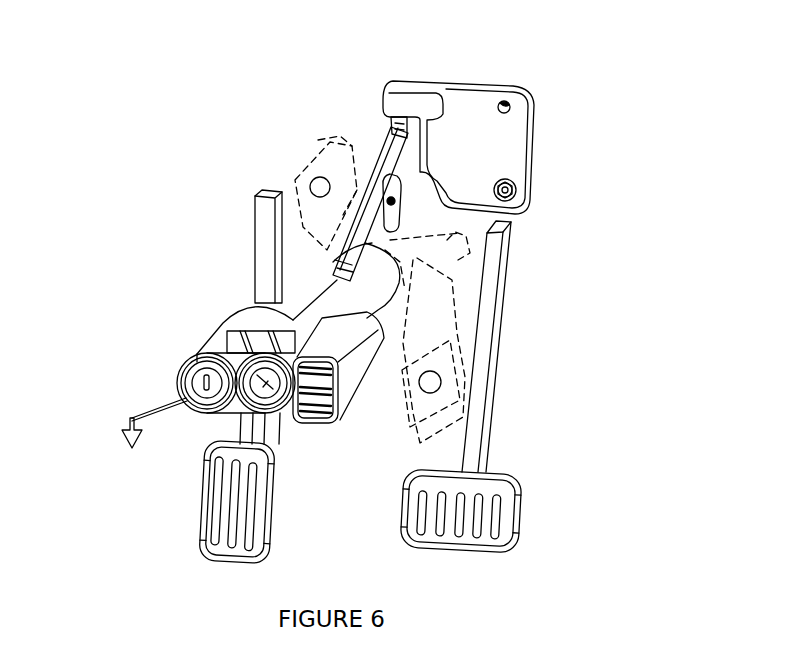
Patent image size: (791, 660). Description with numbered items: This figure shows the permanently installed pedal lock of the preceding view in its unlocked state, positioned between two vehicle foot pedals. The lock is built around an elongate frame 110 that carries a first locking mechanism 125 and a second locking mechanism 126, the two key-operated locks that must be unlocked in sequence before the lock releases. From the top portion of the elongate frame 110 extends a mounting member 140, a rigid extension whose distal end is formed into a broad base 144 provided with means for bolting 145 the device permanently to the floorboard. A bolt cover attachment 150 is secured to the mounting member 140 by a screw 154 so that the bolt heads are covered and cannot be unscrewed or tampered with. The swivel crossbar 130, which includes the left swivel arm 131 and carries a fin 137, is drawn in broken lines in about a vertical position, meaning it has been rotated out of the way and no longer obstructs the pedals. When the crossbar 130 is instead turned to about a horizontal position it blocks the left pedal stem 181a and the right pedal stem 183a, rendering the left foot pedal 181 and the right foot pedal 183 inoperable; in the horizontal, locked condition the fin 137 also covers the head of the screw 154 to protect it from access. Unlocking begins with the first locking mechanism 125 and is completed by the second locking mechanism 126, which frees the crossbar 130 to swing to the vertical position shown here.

The elongate frame 110 is at (334, 298).
The first locking mechanism 125 is at (178, 381).
The second locking mechanism 126 is at (280, 430).
The swivel crossbar 130 is at (410, 322).
The left swivel arm 131 is at (296, 174).
The fin 137 is at (459, 258).
The mounting member 140 is at (386, 156).
The broad base 144 is at (535, 130).
The means for bolting 145 is at (516, 190).
The bolt cover attachment 150 is at (398, 106).
The screw 154 is at (384, 172).
The left foot pedal 181 is at (206, 530).
The left pedal stem 181a is at (262, 268).
The right foot pedal 183 is at (522, 515).
The right pedal stem 183a is at (497, 350).